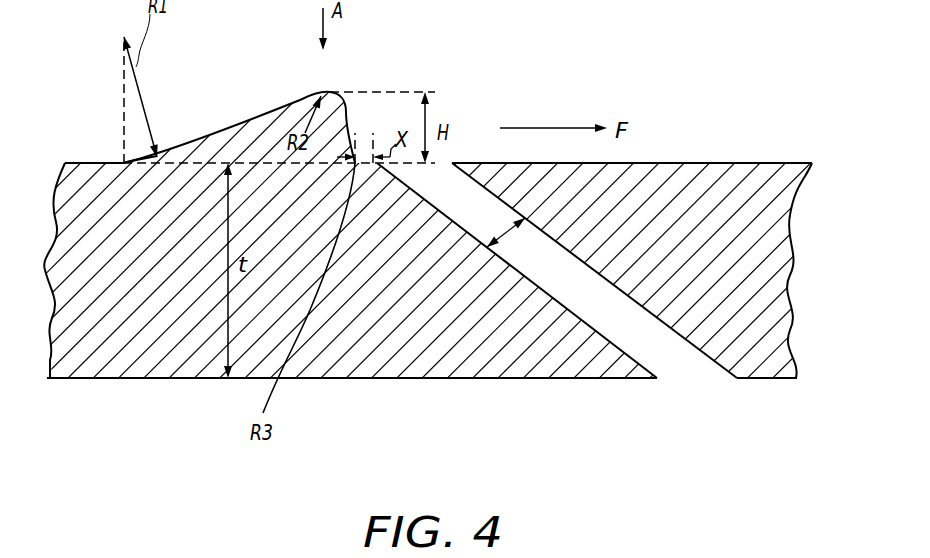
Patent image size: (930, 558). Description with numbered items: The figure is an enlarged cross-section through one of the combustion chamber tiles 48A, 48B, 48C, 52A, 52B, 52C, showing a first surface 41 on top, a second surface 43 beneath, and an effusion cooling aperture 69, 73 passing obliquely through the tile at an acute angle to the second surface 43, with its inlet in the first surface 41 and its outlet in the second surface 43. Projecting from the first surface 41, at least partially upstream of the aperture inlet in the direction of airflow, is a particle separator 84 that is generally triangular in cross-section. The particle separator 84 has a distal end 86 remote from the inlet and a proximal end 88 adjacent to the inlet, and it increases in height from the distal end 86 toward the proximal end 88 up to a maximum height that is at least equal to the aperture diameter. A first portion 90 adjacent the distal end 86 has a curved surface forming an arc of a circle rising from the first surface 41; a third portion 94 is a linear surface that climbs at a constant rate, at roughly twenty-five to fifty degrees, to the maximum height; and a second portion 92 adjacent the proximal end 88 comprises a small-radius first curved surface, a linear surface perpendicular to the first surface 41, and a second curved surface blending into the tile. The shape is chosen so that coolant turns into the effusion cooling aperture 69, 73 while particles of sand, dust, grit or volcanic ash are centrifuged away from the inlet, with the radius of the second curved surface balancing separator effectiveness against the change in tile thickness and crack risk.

The first surface 41 is at (783, 163).
The second surface 43 is at (363, 378).
The combustion chamber tile 48A is at (465, 277).
The combustion chamber tile 48B is at (465, 277).
The combustion chamber tile 48C is at (443, 378).
The combustion chamber tile 52A is at (465, 277).
The combustion chamber tile 52B is at (465, 277).
The combustion chamber tile 52C is at (465, 277).
The effusion cooling aperture 69 is at (592, 310).
The effusion cooling aperture 73 is at (640, 328).
The particle separator 84 is at (257, 117).
The distal end 86 is at (141, 162).
The proximal end 88 is at (347, 108).
The first portion 90 is at (200, 107).
The second portion 92 is at (365, 83).
The third portion 94 is at (302, 50).